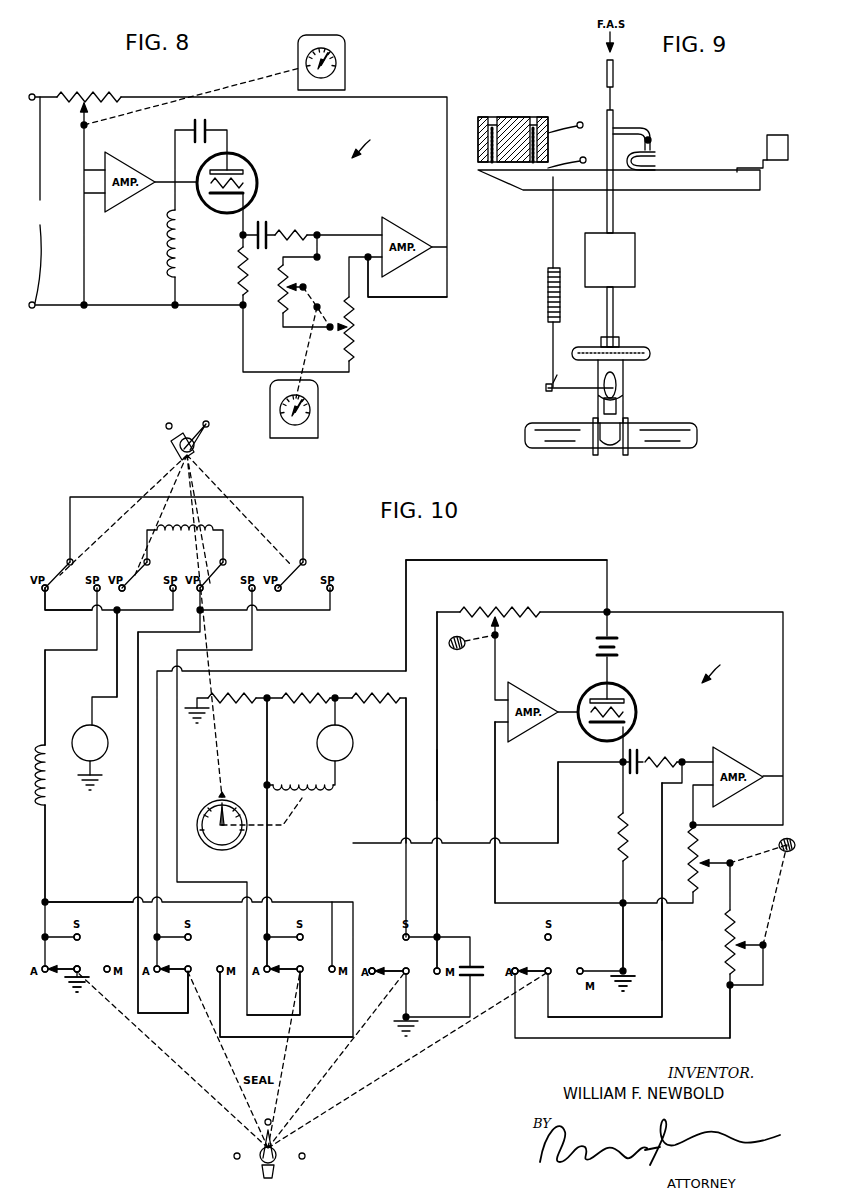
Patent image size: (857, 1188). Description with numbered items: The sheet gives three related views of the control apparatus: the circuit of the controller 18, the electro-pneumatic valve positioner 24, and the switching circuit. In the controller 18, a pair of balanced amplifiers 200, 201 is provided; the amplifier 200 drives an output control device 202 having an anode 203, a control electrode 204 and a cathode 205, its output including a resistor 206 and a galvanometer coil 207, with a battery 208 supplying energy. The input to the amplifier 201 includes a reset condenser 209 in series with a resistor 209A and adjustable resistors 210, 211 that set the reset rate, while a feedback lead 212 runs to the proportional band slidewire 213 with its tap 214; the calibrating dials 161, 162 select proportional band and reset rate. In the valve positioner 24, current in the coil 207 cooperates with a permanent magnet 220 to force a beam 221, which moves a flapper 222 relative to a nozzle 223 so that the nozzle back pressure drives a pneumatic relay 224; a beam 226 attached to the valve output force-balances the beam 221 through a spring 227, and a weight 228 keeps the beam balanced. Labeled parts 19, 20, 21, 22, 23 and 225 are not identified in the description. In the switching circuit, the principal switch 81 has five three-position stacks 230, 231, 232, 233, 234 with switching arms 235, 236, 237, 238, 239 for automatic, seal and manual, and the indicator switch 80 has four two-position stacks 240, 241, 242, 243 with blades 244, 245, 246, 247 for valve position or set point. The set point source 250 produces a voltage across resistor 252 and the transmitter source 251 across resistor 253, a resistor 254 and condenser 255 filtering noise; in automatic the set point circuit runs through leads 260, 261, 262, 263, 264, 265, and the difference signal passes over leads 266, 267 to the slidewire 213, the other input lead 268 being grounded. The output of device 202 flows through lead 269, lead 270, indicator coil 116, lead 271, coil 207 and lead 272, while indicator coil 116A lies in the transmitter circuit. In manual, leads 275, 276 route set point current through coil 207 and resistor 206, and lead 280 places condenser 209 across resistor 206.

In FIG. 8, the controller 18 is at (373, 140).
In FIG. 10, the controller 18 is at (722, 665).
In FIG. 8, the conductor 19 is at (41, 200).
In FIG. 10, the conductor 19 is at (662, 925).
In FIG. 10, the conductor 20 is at (406, 625).
In FIG. 10, the ground conductor 21 is at (624, 953).
In FIG. 9, the coil terminal 22 is at (565, 116).
In FIG. 9, the coil terminal 23 is at (567, 153).
In FIG. 9, the valve positioner 24 is at (501, 228).
In FIG. 10, the indicator switch 80 is at (180, 442).
In FIG. 10, the principal switch 81 is at (273, 1170).
In FIG. 10, the indicator coil 116 is at (185, 543).
In FIG. 10, the indicator coil 116A is at (318, 782).
In FIG. 8, the calibrating dial 161 is at (345, 48).
In FIG. 8, the calibrated dial 162 is at (318, 400).
In FIG. 8, the amplifier 200 is at (112, 160).
In FIG. 10, the amplifier 200 is at (515, 691).
In FIG. 8, the amplifier section 201 is at (392, 220).
In FIG. 10, the amplifier section 201 is at (726, 751).
In FIG. 8, the output control device 202 is at (243, 165).
In FIG. 10, the output control device 202 is at (625, 690).
In FIG. 8, the anode 203 is at (246, 175).
In FIG. 8, the control electrode 204 is at (250, 183).
In FIG. 8, the cathode 205 is at (224, 212).
In FIG. 8, the resistor 206 is at (238, 278).
In FIG. 10, the resistor 206 is at (620, 826).
In FIG. 8, the galvanometer coil 207 is at (176, 246).
In FIG. 9, the galvanometer coil 207 is at (540, 128).
In FIG. 10, the galvanometer coil 207 is at (45, 792).
In FIG. 8, the battery 208 is at (207, 125).
In FIG. 10, the battery 208 is at (620, 655).
In FIG. 8, the reset condenser 209 is at (262, 222).
In FIG. 10, the reset condenser 209 is at (640, 750).
In FIG. 8, the resistor 209A is at (299, 230).
In FIG. 10, the resistor 209A is at (658, 758).
In FIG. 8, the adjustable resistor 210 is at (290, 331).
In FIG. 10, the adjustable resistor 210 is at (737, 860).
In FIG. 8, the adjustable resistor 211 is at (356, 340).
In FIG. 10, the adjustable resistor 211 is at (722, 945).
In FIG. 8, the lead 212 is at (433, 298).
In FIG. 8, the proportional band slidewire 213 is at (86, 93).
In FIG. 10, the proportional band slidewire 213 is at (497, 605).
In FIG. 8, the tap 214 is at (68, 120).
In FIG. 10, the tap 214 is at (495, 633).
In FIG. 9, the permanent magnet 220 is at (518, 116).
In FIG. 9, the beam 221 is at (680, 182).
In FIG. 9, the flapper 222 is at (657, 161).
In FIG. 9, the nozzle 223 is at (656, 141).
In FIG. 9, the pneumatic relay 224 is at (628, 258).
In FIG. 9, the diaphragm 225 is at (633, 346).
In FIG. 9, the beam 226 is at (573, 391).
In FIG. 9, the spring 227 is at (547, 290).
In FIG. 9, the weight 228 is at (777, 134).
In FIG. 10, the switch stack 230 is at (87, 953).
In FIG. 10, the switch stack 231 is at (200, 953).
In FIG. 10, the switch stack 232 is at (312, 928).
In FIG. 10, the switch stack 233 is at (427, 932).
In FIG. 10, the switch stack 234 is at (564, 953).
In FIG. 10, the switching arm 235 is at (57, 978).
In FIG. 10, the switching arm 236 is at (177, 975).
In FIG. 10, the switching arm 237 is at (296, 975).
In FIG. 10, the switching arm 238 is at (393, 964).
In FIG. 10, the switching arm 239 is at (537, 963).
In FIG. 10, the switch stack 240 is at (80, 574).
In FIG. 10, the switch stack 241 is at (152, 575).
In FIG. 10, the switch stack 242 is at (230, 576).
In FIG. 10, the switch stack 243 is at (307, 577).
In FIG. 10, the switch blade 244 is at (71, 596).
In FIG. 10, the switch blade 245 is at (147, 596).
In FIG. 10, the switch blade 246 is at (226, 596).
In FIG. 10, the switch blade 247 is at (304, 596).
In FIG. 10, the set point source 250 is at (78, 734).
In FIG. 10, the transmitter source 251 is at (350, 755).
In FIG. 10, the resistor 252 is at (230, 705).
In FIG. 10, the resistor 253 is at (303, 705).
In FIG. 10, the resistor 254 is at (378, 705).
In FIG. 10, the condenser 255 is at (481, 978).
In FIG. 10, the lead 260 is at (117, 672).
In FIG. 10, the lead 261 is at (68, 618).
In FIG. 10, the lead 262 is at (126, 497).
In FIG. 10, the lead 263 is at (178, 755).
In FIG. 10, the lead 264 is at (270, 855).
In FIG. 10, the lead 265 is at (266, 746).
In FIG. 10, the lead 266 is at (406, 790).
In FIG. 10, the lead 267 is at (440, 778).
In FIG. 10, the lead 268 is at (495, 860).
In FIG. 10, the lead 269 is at (522, 558).
In FIG. 10, the lead 270 is at (137, 822).
In FIG. 10, the lead 271 is at (47, 690).
In FIG. 10, the lead 272 is at (47, 855).
In FIG. 10, the lead 275 is at (97, 900).
In FIG. 10, the lead 276 is at (298, 1042).
In FIG. 10, the lead 280 is at (663, 962).